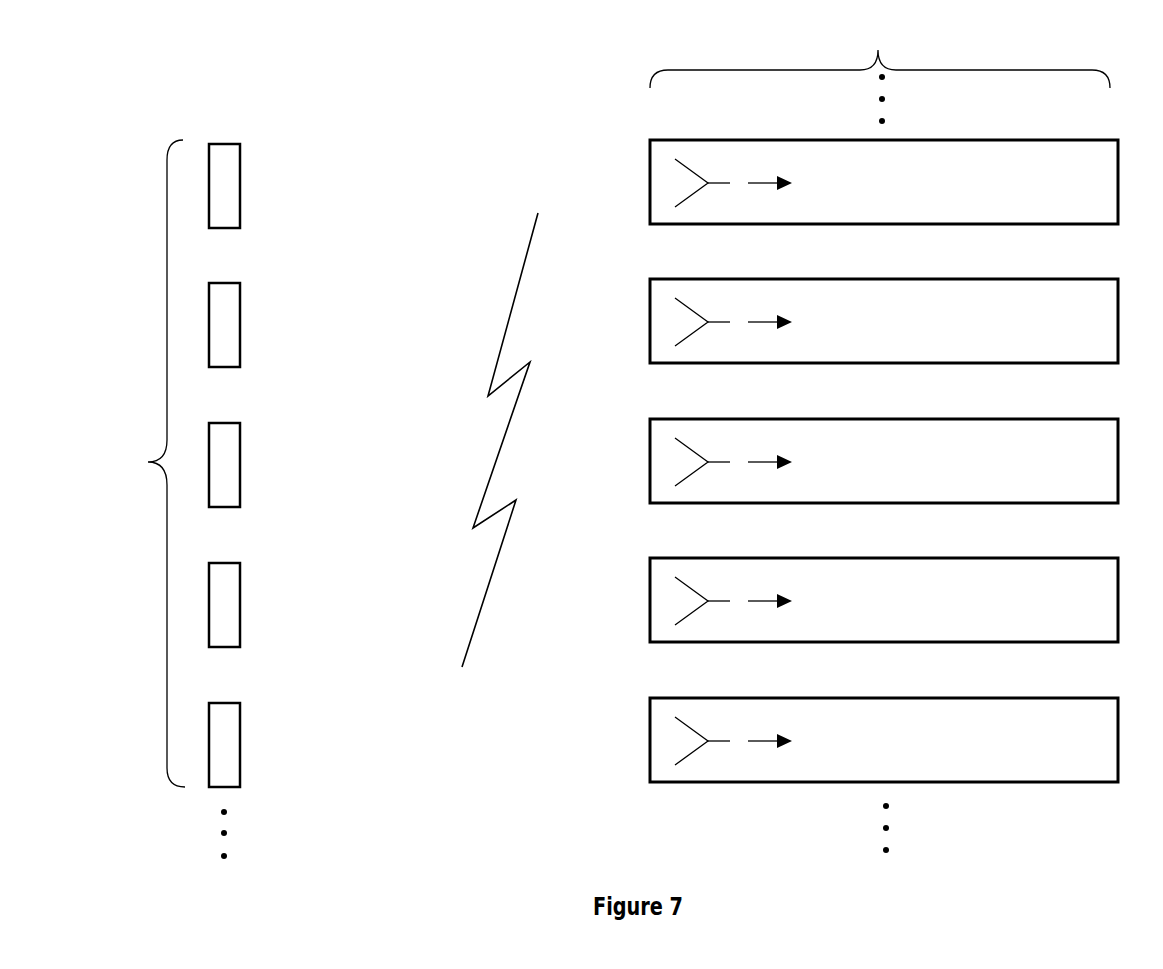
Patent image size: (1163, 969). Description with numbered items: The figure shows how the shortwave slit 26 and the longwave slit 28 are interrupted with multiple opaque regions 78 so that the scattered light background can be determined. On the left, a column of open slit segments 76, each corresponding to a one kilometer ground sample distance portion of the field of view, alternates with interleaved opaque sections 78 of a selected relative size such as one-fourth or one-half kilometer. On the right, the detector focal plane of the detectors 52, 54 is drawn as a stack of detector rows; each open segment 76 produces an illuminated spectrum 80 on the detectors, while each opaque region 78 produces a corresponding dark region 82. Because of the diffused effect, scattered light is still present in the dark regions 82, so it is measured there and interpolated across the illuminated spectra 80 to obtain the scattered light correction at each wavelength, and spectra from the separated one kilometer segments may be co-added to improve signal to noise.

The shortwave slit 26 is at (231, 499).
The longwave slit 28 is at (231, 499).
The detector 52 is at (884, 452).
The detector 54 is at (884, 452).
The ground sample distance segment 76 is at (240, 185).
The opaque region 78 is at (238, 261).
The illuminated spectra 80 is at (845, 203).
The dark region 82 is at (904, 459).